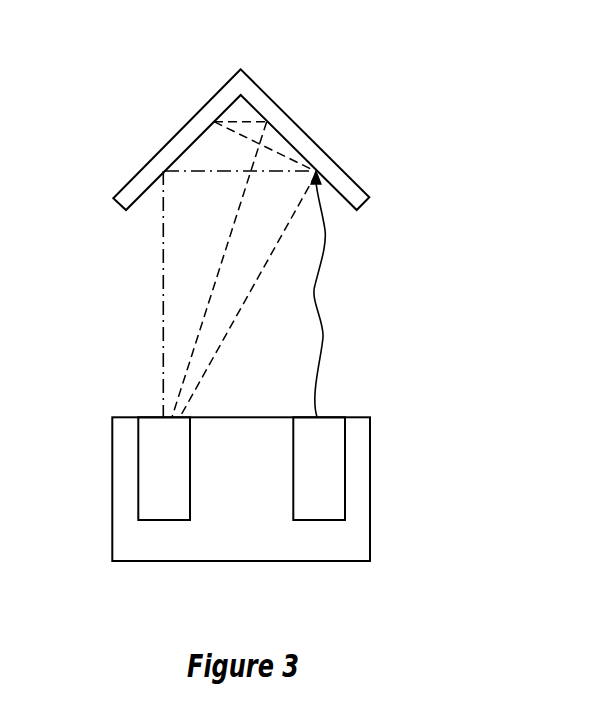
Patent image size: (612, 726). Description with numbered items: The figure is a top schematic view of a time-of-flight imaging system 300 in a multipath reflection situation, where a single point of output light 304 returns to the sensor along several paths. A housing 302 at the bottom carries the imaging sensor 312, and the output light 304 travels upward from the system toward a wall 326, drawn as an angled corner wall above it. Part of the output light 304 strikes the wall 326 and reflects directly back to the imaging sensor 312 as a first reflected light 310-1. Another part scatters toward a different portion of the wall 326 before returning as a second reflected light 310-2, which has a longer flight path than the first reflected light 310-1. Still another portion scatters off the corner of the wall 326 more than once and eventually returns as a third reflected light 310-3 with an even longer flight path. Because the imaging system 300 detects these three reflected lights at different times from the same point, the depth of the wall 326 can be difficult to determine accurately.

The TOF imaging system 300 is at (410, 367).
The substrate / housing 302 is at (345, 469).
The output light 304 is at (315, 290).
The first reflected light 310-1 is at (258, 277).
The second reflected light 310-2 is at (163, 296).
The third reflected light 310-3 is at (227, 247).
The imaging sensor 312 is at (138, 468).
The wall 326 is at (288, 117).